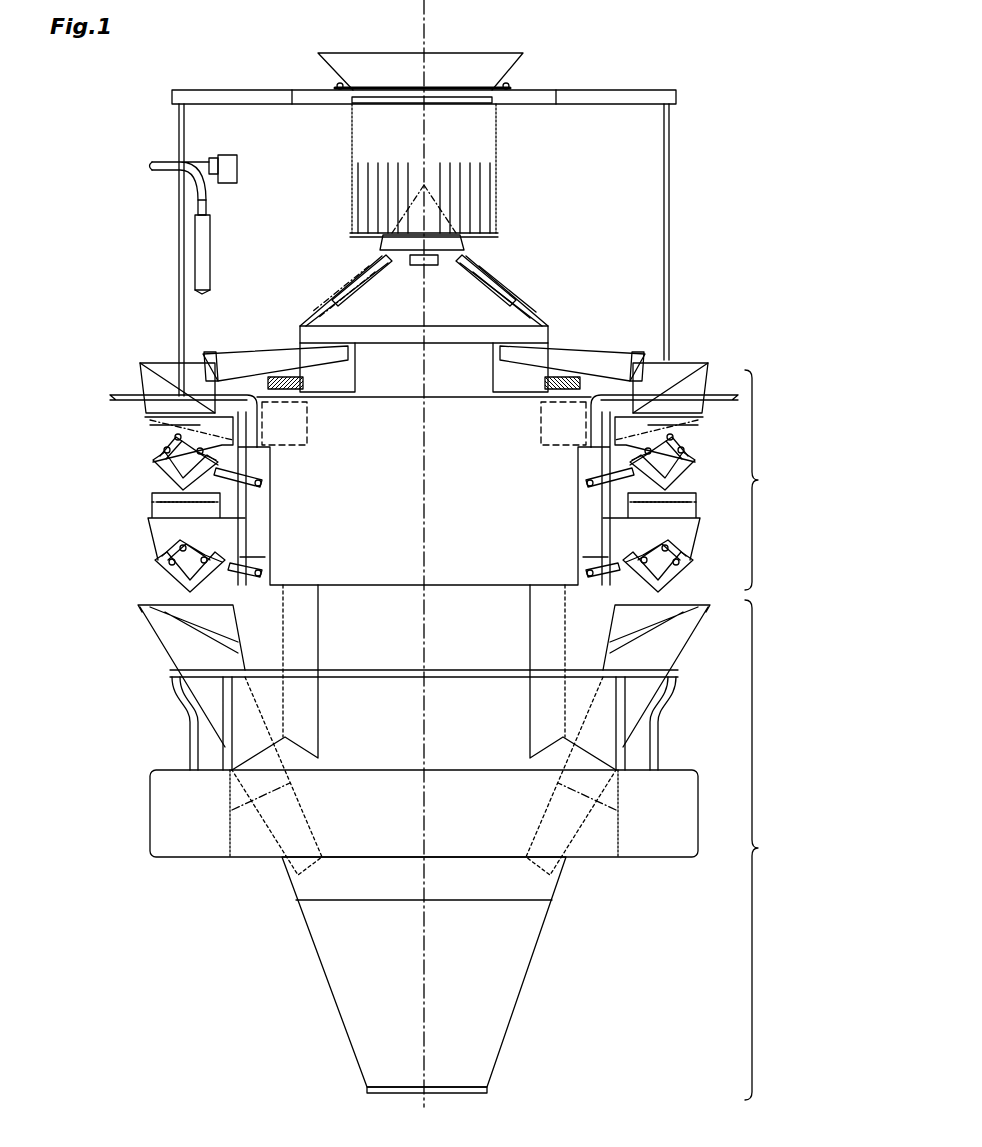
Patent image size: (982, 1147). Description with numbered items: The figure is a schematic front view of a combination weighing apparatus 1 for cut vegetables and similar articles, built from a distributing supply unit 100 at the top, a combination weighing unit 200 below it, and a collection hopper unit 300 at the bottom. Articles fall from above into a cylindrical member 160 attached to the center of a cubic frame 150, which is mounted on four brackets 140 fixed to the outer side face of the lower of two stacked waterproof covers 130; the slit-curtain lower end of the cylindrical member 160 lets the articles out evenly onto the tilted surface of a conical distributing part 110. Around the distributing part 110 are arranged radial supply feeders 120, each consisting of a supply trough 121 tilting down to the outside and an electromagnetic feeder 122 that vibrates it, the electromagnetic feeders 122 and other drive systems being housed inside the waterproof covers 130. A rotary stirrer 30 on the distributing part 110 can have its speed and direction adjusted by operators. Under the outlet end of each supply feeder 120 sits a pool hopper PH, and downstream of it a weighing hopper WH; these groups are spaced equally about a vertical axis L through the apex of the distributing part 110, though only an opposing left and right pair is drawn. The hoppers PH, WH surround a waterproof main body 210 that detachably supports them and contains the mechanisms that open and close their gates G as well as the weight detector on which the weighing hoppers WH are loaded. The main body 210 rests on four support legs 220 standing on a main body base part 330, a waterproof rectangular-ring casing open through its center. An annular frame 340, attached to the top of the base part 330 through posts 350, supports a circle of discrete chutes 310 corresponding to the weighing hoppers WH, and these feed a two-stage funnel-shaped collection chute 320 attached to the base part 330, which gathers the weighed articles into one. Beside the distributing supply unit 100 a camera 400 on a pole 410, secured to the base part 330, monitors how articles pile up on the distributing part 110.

The combination weighing apparatus 1 is at (613, 75).
The vertical axis L is at (425, 27).
The rotary stirrer 30 is at (539, 295).
The distributing supply unit 100 is at (515, 182).
The distributing part 110 is at (343, 255).
The supply feeder 120 is at (278, 356).
The supply trough 121 is at (236, 360).
The electromagnetic feeder 122 is at (296, 452).
The waterproof cover 130 is at (452, 428).
The bracket 140 is at (122, 395).
The frame 150 is at (668, 160).
The cylindrical member 160 is at (480, 133).
The combination weighing unit 200 is at (774, 480).
The main body 210 is at (653, 527).
The support leg 220 is at (313, 647).
The collection hopper unit 300 is at (776, 850).
The discrete chute 310 is at (172, 640).
The collection chute 320 is at (517, 965).
The main body base part 330 is at (168, 818).
The annular frame 340 is at (168, 675).
The post 350 is at (183, 713).
The camera 400 is at (238, 168).
The pole 410 is at (203, 242).
The pool hopper PH is at (150, 437).
The weighing hopper WH is at (155, 542).
The gate G is at (162, 466).